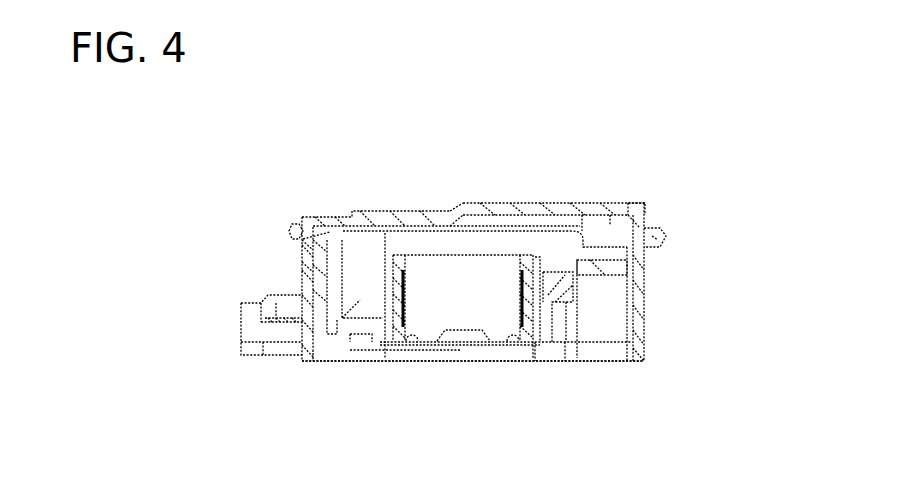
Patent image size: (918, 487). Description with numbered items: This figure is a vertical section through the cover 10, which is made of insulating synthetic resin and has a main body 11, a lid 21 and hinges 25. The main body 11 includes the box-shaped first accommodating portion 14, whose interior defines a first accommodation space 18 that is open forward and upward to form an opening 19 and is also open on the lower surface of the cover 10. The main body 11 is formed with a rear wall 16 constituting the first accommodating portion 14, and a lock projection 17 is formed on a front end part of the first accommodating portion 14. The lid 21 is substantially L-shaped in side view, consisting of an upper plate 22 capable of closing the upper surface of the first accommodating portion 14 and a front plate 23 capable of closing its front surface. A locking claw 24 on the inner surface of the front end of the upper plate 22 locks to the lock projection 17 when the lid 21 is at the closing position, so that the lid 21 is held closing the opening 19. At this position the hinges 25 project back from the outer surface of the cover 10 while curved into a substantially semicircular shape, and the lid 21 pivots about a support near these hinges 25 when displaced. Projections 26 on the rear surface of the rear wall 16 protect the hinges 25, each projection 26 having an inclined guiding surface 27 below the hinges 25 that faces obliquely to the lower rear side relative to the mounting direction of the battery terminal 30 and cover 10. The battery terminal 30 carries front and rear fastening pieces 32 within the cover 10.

The cover 10 is at (640, 90).
The main body 11 is at (303, 363).
The first accommodating portion 14 is at (573, 177).
The rear wall 16 is at (307, 275).
The lock projection 17 is at (601, 272).
The first accommodation space 18 is at (343, 291).
The opening 19 is at (343, 237).
The lid 21 is at (645, 203).
The upper plate 22 is at (482, 207).
The front plate 23 is at (640, 291).
The locking claw 24 is at (600, 254).
The hinges 25 is at (289, 228).
The projections 26 is at (300, 256).
The guiding surface 27 is at (298, 267).
The battery terminal 30 is at (446, 243).
The fastening pieces 32 is at (412, 272).